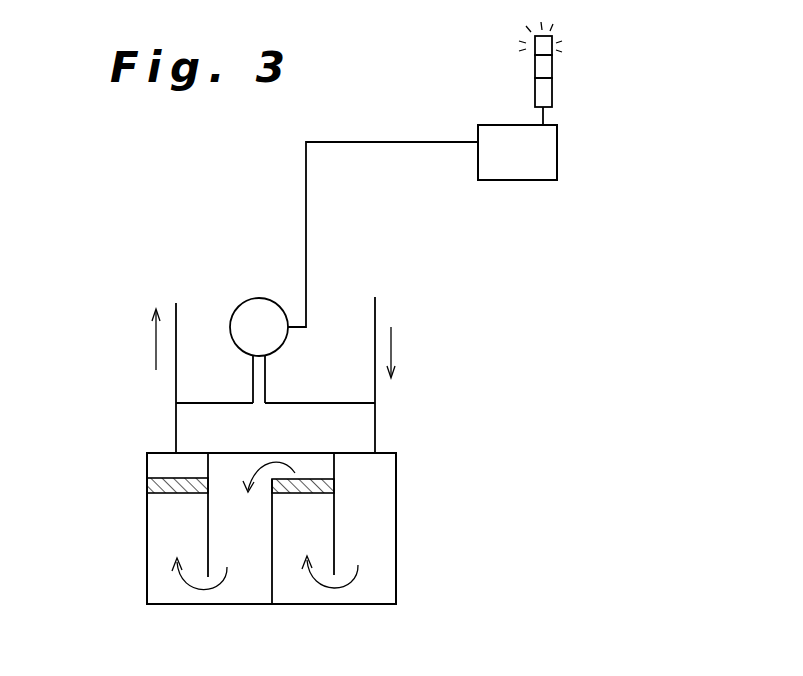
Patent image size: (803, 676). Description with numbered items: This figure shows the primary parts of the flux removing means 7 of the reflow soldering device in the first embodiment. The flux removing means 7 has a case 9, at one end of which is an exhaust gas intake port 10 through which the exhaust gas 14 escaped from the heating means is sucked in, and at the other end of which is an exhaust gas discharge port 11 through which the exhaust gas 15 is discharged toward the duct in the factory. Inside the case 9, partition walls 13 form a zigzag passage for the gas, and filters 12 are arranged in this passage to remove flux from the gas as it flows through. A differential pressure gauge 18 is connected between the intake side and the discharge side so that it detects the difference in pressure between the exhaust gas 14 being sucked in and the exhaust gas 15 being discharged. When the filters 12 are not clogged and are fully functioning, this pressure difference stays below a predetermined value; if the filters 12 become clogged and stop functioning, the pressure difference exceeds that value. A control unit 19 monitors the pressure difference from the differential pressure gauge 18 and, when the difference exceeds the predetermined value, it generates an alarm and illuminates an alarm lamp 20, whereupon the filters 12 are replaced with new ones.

The flux removing means 7 is at (400, 572).
The case 9 is at (396, 478).
The exhaust gas intake port 10 is at (375, 422).
The exhaust gas discharge port 11 is at (175, 430).
The filter 12 is at (167, 495).
The partition wall 13 is at (207, 535).
The exhaust gas 14 is at (393, 343).
The exhaust gas 15 is at (155, 348).
The differential pressure gauge 18 is at (230, 322).
The control unit 19 is at (530, 183).
The alarm lamp 20 is at (553, 33).